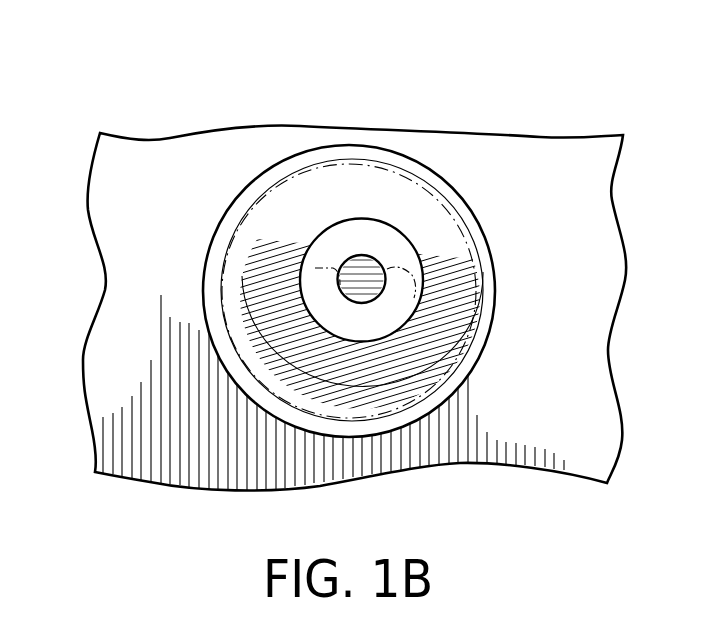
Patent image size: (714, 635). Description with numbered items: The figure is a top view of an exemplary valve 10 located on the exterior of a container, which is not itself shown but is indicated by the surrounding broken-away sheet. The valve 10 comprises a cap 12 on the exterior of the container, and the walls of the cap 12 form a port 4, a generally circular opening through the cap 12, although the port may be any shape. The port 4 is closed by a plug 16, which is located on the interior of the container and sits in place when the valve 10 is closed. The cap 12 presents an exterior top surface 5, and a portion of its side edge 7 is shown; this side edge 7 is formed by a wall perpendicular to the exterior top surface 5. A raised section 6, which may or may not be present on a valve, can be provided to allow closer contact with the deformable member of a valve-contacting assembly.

The valve 10 is at (538, 229).
The exterior top surface 5 is at (373, 183).
The side edge 7 is at (238, 378).
The cap 12 is at (430, 350).
The port 4 is at (395, 245).
The plug 16 is at (373, 277).
The raised section 6 is at (413, 278).